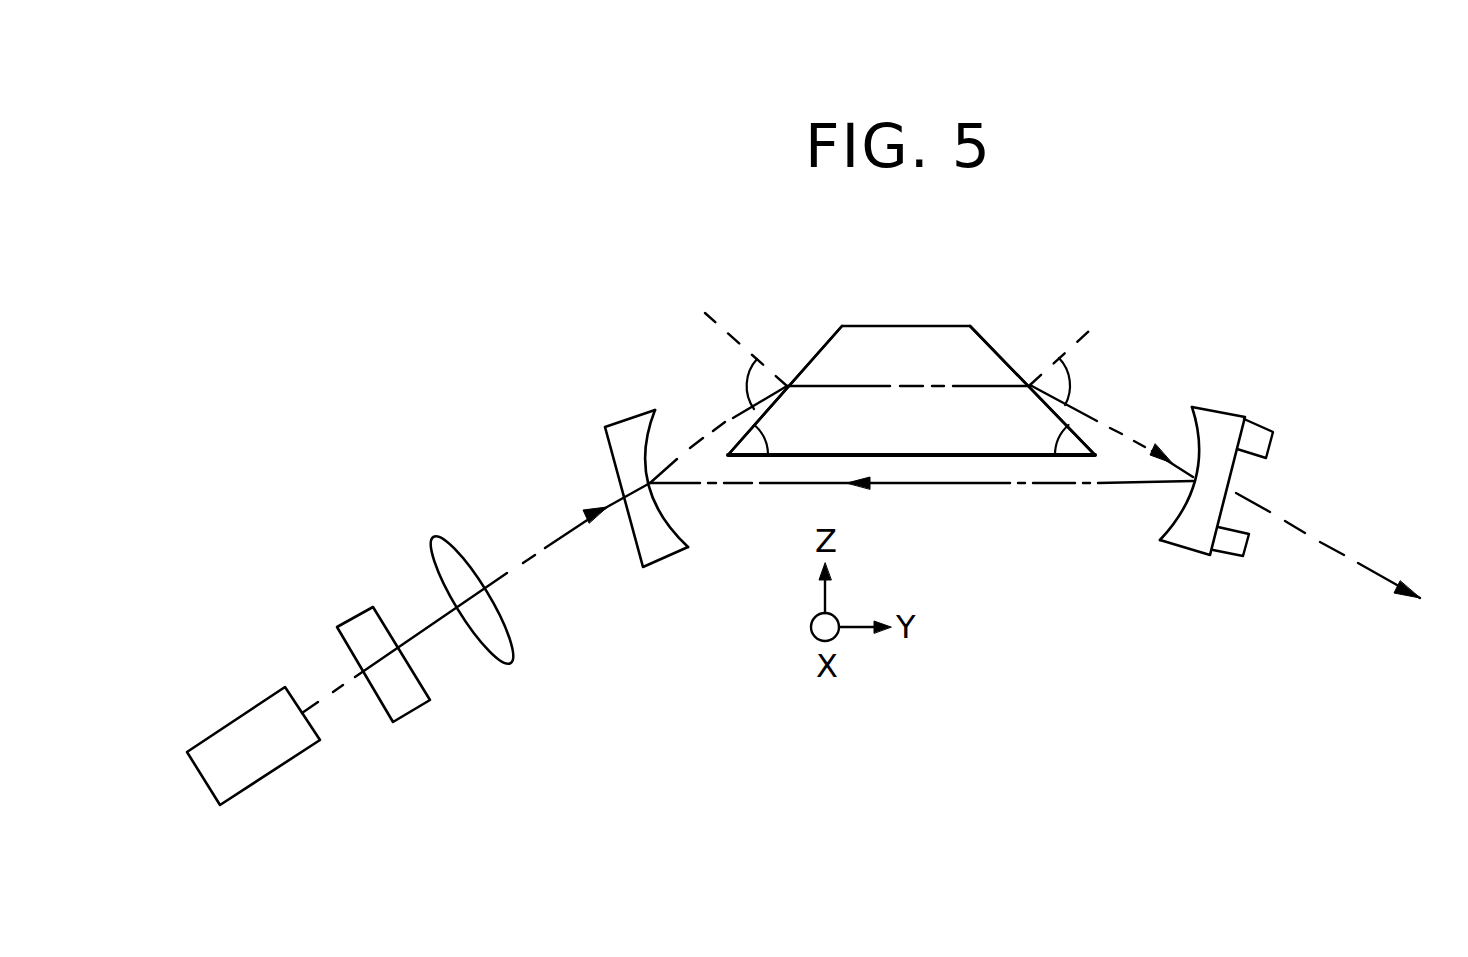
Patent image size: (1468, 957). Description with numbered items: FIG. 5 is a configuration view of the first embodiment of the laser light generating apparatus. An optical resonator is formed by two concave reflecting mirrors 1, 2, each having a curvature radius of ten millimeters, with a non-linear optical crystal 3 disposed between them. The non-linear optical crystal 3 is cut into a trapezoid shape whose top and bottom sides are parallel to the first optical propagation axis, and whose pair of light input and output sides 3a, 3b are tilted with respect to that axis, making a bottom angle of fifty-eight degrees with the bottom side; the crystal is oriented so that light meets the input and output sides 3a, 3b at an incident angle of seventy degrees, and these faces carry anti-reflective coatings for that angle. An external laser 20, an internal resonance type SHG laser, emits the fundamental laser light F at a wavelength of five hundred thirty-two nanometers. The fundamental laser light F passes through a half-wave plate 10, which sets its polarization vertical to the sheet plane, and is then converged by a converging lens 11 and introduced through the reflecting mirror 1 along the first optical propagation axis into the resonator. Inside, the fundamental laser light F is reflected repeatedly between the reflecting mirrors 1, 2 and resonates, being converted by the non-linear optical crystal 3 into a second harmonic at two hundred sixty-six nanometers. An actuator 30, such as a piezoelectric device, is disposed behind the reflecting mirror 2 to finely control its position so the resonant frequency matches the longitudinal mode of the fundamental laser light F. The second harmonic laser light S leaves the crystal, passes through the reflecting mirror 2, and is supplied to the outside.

The reflecting mirror 1 is at (634, 443).
The reflecting mirror 2 is at (1216, 427).
The non-linear optical crystal 3 is at (897, 348).
The light input and output side 3a is at (820, 348).
The light input and output side 3b is at (992, 348).
The half-wave plate 10 is at (368, 640).
The converging lens 11 is at (450, 575).
The external laser 20 is at (238, 740).
The actuator 30 is at (1260, 443).
The fundamental laser light F is at (318, 702).
The second harmonic laser light S is at (1344, 555).